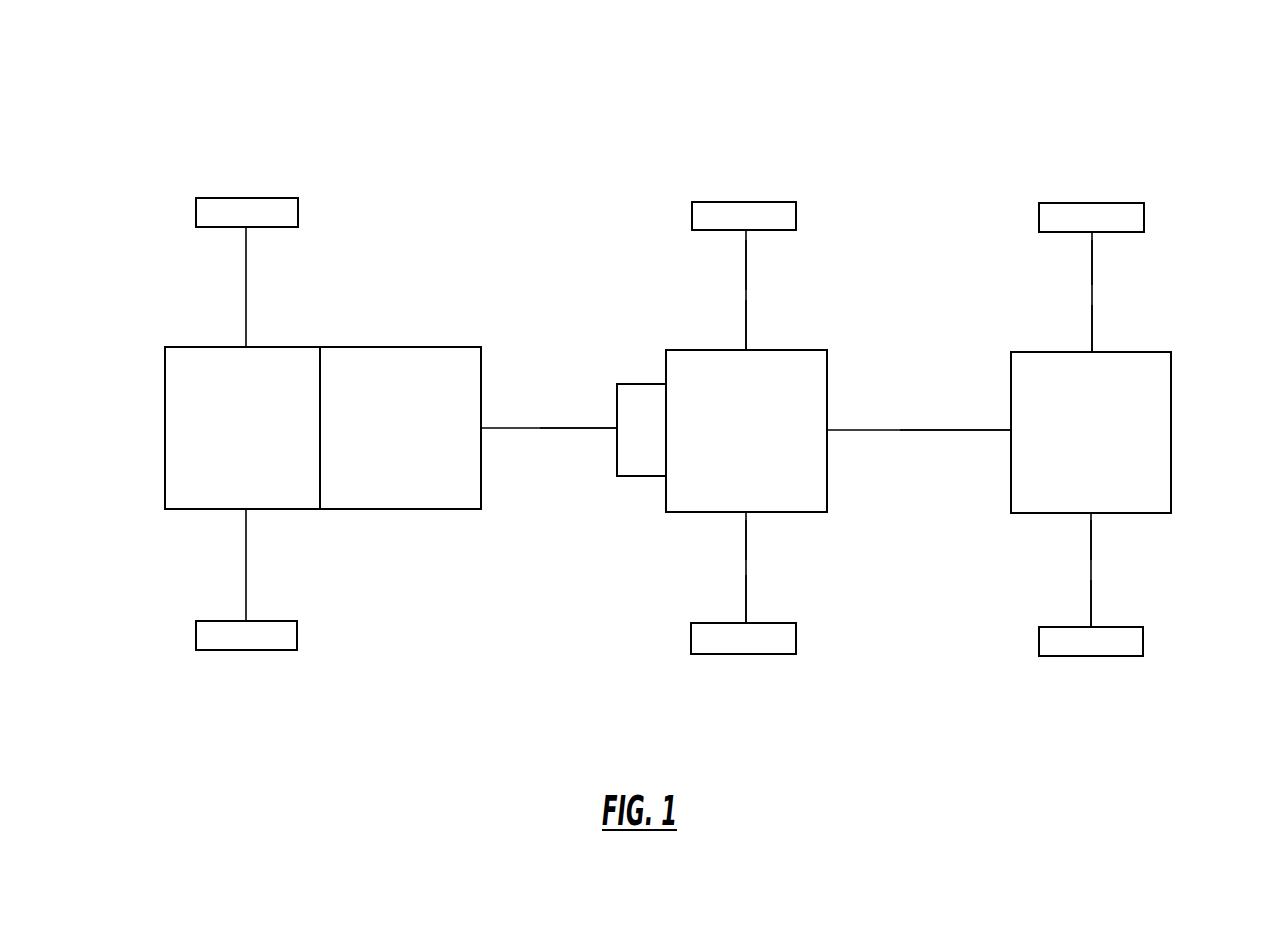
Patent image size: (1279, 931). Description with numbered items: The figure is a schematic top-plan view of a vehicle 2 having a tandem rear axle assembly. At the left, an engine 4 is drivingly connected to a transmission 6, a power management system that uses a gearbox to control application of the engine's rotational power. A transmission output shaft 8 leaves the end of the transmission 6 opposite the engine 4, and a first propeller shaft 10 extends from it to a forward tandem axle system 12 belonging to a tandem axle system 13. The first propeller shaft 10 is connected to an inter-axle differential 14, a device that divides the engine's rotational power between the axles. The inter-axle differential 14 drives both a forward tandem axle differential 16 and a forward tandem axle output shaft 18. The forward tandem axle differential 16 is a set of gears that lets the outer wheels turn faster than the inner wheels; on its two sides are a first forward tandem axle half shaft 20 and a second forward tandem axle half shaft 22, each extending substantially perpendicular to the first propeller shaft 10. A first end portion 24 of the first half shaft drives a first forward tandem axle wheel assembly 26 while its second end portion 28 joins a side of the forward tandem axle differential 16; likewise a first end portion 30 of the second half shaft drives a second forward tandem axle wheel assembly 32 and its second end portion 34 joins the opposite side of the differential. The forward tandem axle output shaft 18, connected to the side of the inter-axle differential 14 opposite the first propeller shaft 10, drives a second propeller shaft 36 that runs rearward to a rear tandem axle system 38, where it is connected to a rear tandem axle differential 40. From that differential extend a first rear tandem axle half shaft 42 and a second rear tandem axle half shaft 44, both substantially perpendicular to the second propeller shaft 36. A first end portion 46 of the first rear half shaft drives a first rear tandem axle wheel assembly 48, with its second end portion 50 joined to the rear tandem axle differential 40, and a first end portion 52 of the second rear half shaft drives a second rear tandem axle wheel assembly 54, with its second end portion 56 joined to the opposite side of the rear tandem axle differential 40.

The vehicle 2 is at (972, 89).
The engine 4 is at (251, 438).
The transmission 6 is at (411, 438).
The transmission output shaft 8 is at (494, 428).
The first propeller shaft 10 is at (557, 428).
The forward tandem axle system 12 is at (771, 744).
The tandem axle system 13 is at (972, 795).
The inter-axle differential 14 is at (651, 445).
The forward tandem axle differential 16 is at (758, 445).
The forward tandem axle output shaft 18 is at (851, 430).
The first forward tandem axle half shaft 20 is at (746, 568).
The second forward tandem axle half shaft 22 is at (746, 298).
The first end portion of the first forward tandem axle half shaft 24 is at (748, 602).
The first forward tandem axle wheel assembly 26 is at (737, 655).
The second end portion of the first forward tandem axle half shaft 28 is at (748, 547).
The first end portion of the second forward tandem axle half shaft 30 is at (747, 260).
The second forward tandem axle wheel assembly 32 is at (761, 201).
The second end portion of the second forward tandem axle half shaft 34 is at (747, 320).
The second propeller shaft 36 is at (940, 430).
The rear tandem axle system 38 is at (1093, 734).
The rear tandem axle differential 40 is at (1079, 445).
The first rear tandem axle half shaft 42 is at (1090, 578).
The second rear tandem axle half shaft 44 is at (1092, 296).
The first end portion of the first rear tandem axle half shaft 46 is at (1092, 597).
The first rear tandem axle wheel assembly 48 is at (1088, 657).
The second end portion of the first rear tandem axle half shaft 50 is at (1092, 540).
The first end portion of the second rear tandem axle half shaft 52 is at (1093, 268).
The second rear tandem axle wheel assembly 54 is at (1097, 202).
The second end portion of the second rear tandem axle half shaft 56 is at (1093, 337).